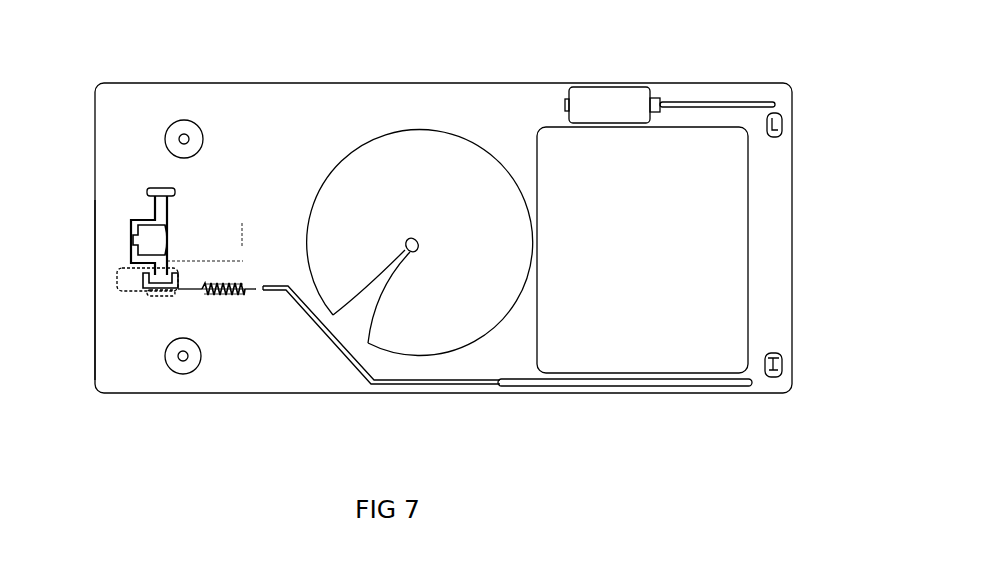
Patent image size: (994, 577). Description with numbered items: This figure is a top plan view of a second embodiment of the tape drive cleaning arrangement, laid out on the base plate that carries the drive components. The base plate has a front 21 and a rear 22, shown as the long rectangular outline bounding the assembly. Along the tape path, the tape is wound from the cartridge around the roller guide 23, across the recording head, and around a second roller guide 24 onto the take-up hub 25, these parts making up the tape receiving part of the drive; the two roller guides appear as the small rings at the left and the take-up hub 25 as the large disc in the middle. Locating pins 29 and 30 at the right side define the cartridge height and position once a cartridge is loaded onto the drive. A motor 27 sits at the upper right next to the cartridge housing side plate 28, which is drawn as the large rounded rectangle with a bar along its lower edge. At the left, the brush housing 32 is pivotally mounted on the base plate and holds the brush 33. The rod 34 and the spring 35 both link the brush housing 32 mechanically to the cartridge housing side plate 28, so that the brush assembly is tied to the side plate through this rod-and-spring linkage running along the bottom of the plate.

The front 21 is at (792, 230).
The rear 22 is at (94, 300).
The roller guide 23 is at (184, 120).
The second roller guide 24 is at (188, 374).
The take-up hub 25 is at (462, 208).
The motor 27 is at (618, 105).
The cartridge housing side plate 28 is at (592, 385).
The locating pin 29 is at (782, 362).
The locating pin 30 is at (782, 123).
The brush housing 32 is at (147, 192).
The brush 33 is at (131, 246).
The rod 34 is at (373, 385).
The spring 35 is at (222, 297).